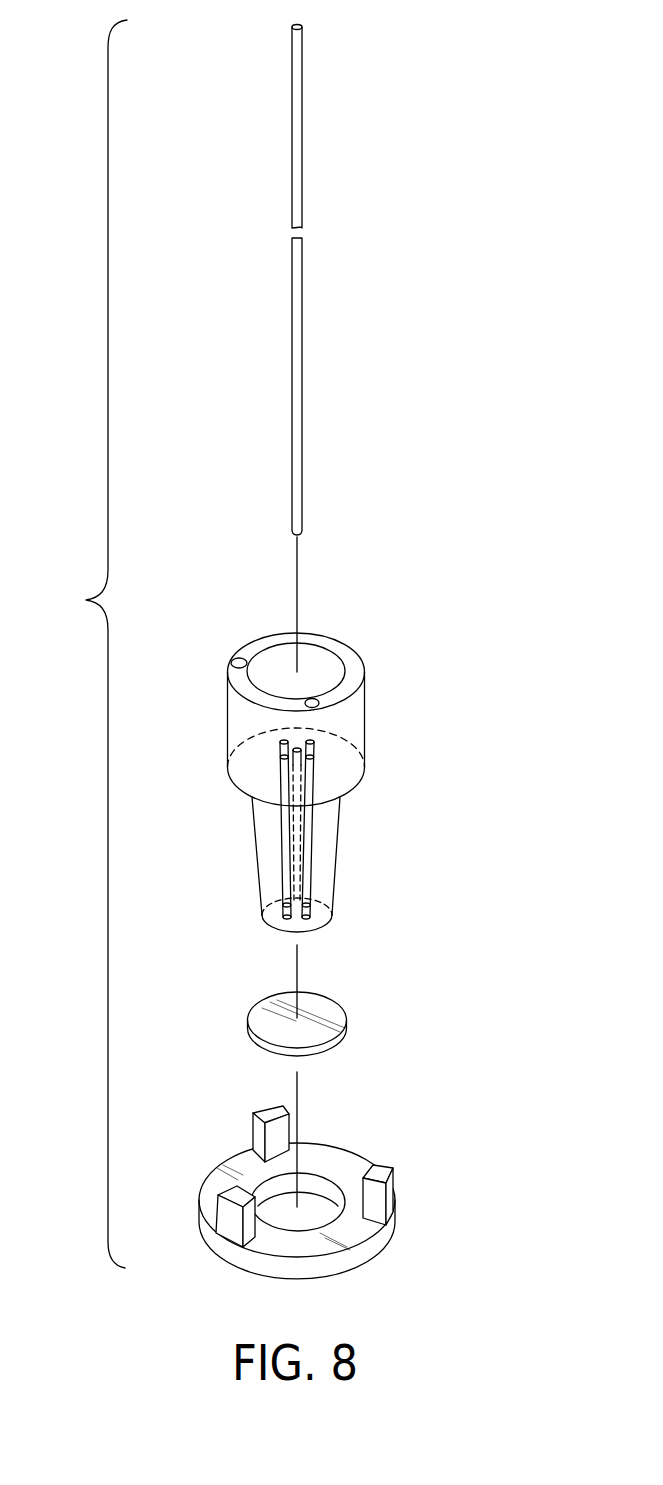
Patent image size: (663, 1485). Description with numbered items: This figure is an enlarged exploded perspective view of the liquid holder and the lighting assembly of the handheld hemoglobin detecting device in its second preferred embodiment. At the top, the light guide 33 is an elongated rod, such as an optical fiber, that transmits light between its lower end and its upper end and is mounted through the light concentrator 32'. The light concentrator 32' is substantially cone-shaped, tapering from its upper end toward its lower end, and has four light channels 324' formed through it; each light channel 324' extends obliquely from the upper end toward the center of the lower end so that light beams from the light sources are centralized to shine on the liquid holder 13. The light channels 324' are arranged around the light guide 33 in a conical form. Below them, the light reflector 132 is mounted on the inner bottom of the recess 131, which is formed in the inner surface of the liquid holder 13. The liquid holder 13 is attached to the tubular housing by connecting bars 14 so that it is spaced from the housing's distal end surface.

The light guide 33 is at (296, 82).
The light concentrator 32' is at (334, 782).
The light channel 324' is at (347, 829).
The light reflector 132 is at (337, 1010).
The liquid holder 13 is at (368, 1231).
The recess 131 is at (312, 1209).
The connecting bar 14 is at (388, 1188).